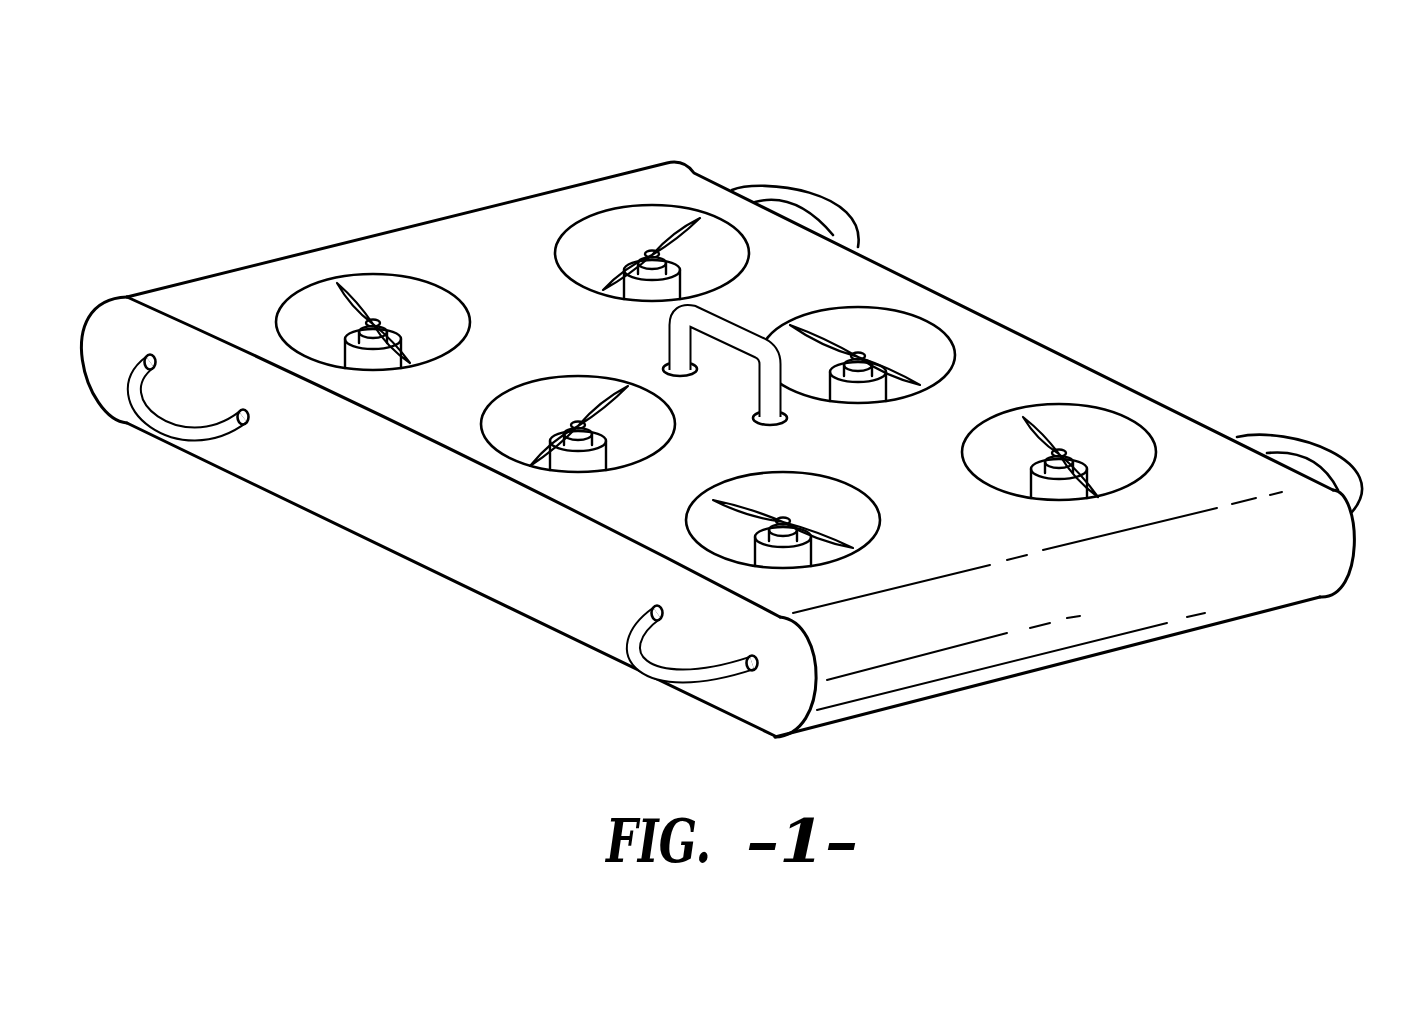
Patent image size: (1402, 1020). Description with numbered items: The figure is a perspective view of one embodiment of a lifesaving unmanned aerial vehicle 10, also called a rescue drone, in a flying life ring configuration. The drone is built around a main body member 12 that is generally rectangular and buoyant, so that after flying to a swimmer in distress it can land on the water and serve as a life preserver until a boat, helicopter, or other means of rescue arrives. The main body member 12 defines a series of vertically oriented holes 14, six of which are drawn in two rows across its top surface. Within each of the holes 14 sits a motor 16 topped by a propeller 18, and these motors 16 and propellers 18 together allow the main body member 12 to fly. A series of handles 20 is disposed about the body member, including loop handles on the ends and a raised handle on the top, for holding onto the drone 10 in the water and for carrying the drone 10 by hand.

The lifesaving unmanned aerial vehicle 10 is at (732, 406).
The main body member 12 is at (1007, 363).
The holes 14 is at (307, 308).
The motors 16 is at (680, 297).
The propellers 18 is at (357, 302).
The handles 20 is at (778, 185).